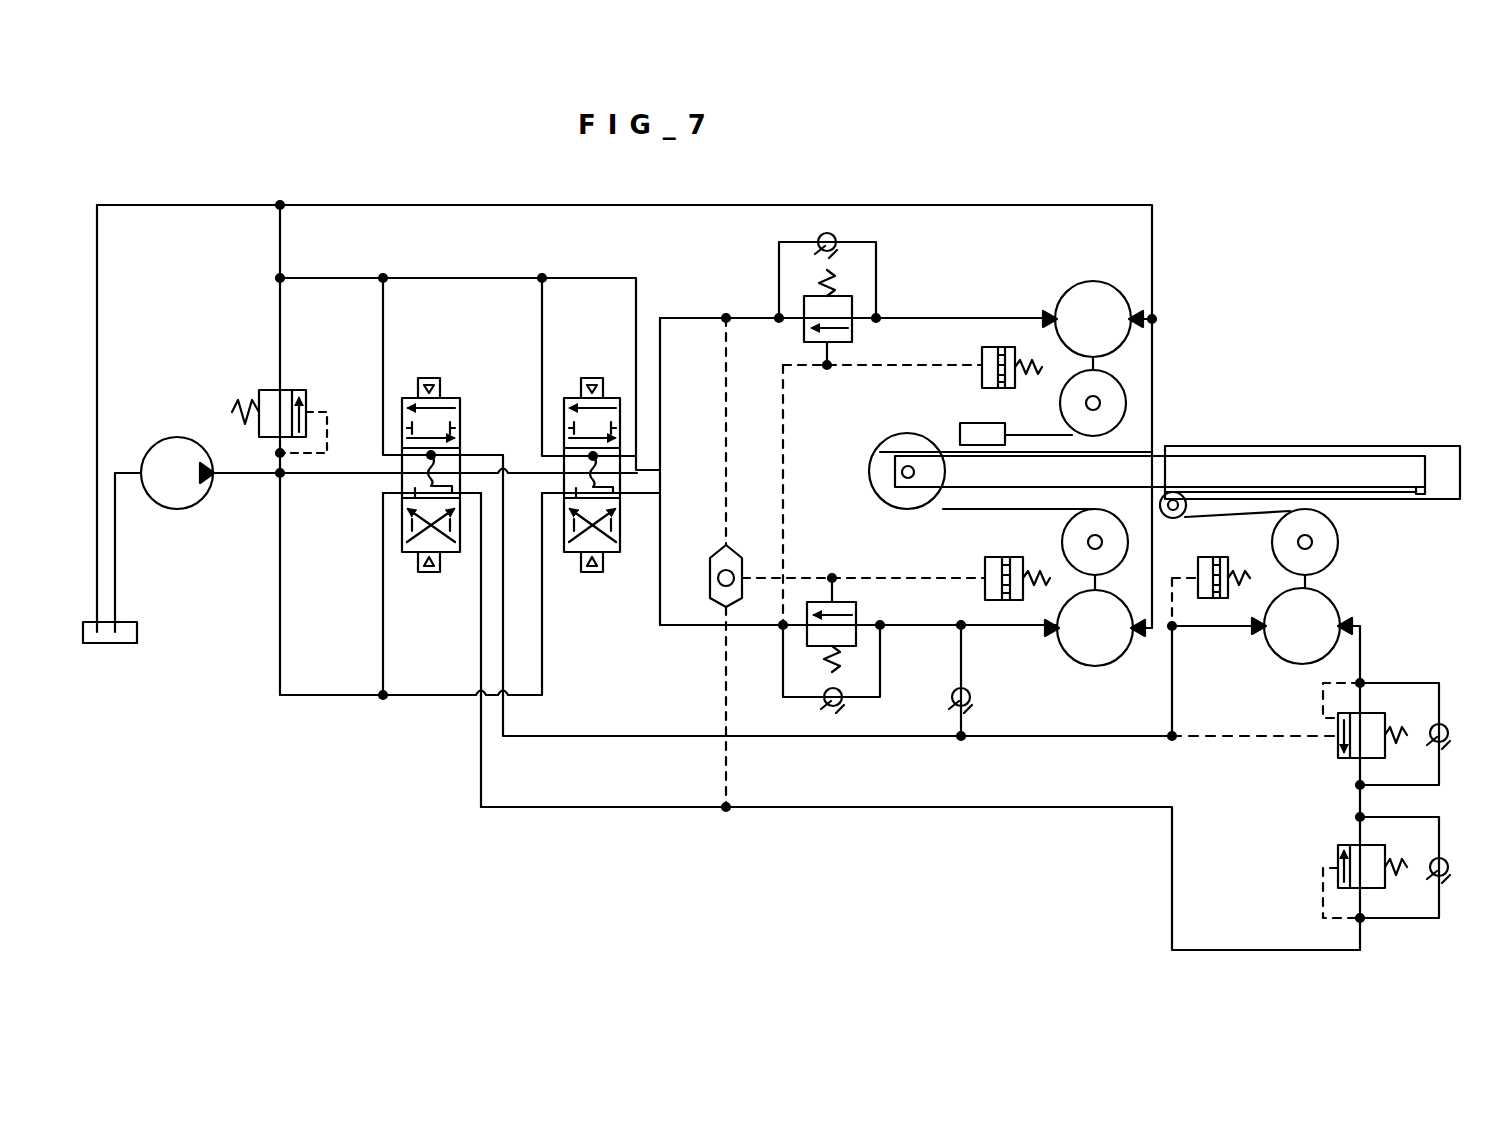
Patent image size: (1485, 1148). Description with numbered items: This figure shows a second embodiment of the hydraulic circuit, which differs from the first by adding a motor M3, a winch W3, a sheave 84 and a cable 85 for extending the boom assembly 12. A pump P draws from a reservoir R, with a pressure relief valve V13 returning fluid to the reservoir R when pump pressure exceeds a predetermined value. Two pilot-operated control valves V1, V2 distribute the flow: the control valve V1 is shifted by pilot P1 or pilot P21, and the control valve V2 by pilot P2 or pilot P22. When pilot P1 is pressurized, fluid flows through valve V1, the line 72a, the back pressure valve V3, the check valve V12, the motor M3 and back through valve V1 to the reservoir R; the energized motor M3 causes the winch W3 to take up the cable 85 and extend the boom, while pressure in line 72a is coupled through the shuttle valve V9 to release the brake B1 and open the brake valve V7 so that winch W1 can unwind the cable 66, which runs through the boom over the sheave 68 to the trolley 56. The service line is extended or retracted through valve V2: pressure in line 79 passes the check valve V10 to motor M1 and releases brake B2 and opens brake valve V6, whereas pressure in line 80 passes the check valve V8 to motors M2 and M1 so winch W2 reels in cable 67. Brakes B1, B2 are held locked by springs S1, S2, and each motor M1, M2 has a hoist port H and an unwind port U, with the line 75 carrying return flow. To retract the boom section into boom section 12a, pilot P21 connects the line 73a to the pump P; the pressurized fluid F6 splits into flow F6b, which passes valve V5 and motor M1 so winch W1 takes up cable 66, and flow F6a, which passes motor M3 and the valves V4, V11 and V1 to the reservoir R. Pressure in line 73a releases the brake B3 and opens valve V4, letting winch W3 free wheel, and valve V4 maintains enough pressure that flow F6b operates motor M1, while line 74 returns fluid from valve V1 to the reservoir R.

The hydraulic line 74 is at (155, 205).
The hydraulic line 75 is at (535, 205).
The hydraulic line 80 is at (683, 318).
The hydraulic line 79 is at (698, 628).
The hydraulic line 73a is at (1052, 738).
The hydraulic line 72a is at (1052, 809).
The pump P is at (189, 486).
The reservoir R is at (137, 632).
The pressure relief valve V13 is at (259, 390).
The control valve V1 is at (400, 483).
The control valve V2 is at (622, 482).
The pilot P1 is at (429, 378).
The pilot P2 is at (592, 378).
The pilot P21 is at (420, 572).
The pilot P22 is at (588, 572).
The brake valve V6 is at (804, 336).
The brake valve V7 is at (856, 607).
The check valve V8 is at (840, 240).
The shuttle valve V9 is at (722, 547).
The check valve V10 is at (822, 704).
The valve V5 is at (972, 695).
The valve V4 is at (1338, 752).
The back pressure valve V3 is at (1338, 851).
The check valve V12 is at (1438, 722).
The valve V11 is at (1438, 857).
The winch brake B1 is at (985, 563).
The winch brake B2 is at (982, 352).
The brake B3 is at (1208, 598).
The spring S1 is at (1045, 588).
The spring S2 is at (1038, 362).
The drive motor M1 is at (1114, 641).
The drive motor M2 is at (1113, 332).
The motor M3 is at (1322, 639).
The winch W1 is at (1063, 537).
The winch W2 is at (1060, 403).
The winch W3 is at (1338, 542).
The hoist port H is at (1050, 316).
The unwind port U is at (1158, 318).
The pressurized fluid F6 is at (648, 720).
The fluid flow F6a is at (1150, 705).
The fluid flow F6b is at (935, 705).
The trolley 56 is at (960, 430).
The cable 67 is at (1022, 440).
The sheave 68 is at (888, 446).
The cable 66 is at (945, 505).
The boom assembly 12 is at (1240, 440).
The boom section 12a is at (880, 480).
The sheave 84 is at (1173, 518).
The cable 85 is at (1218, 518).